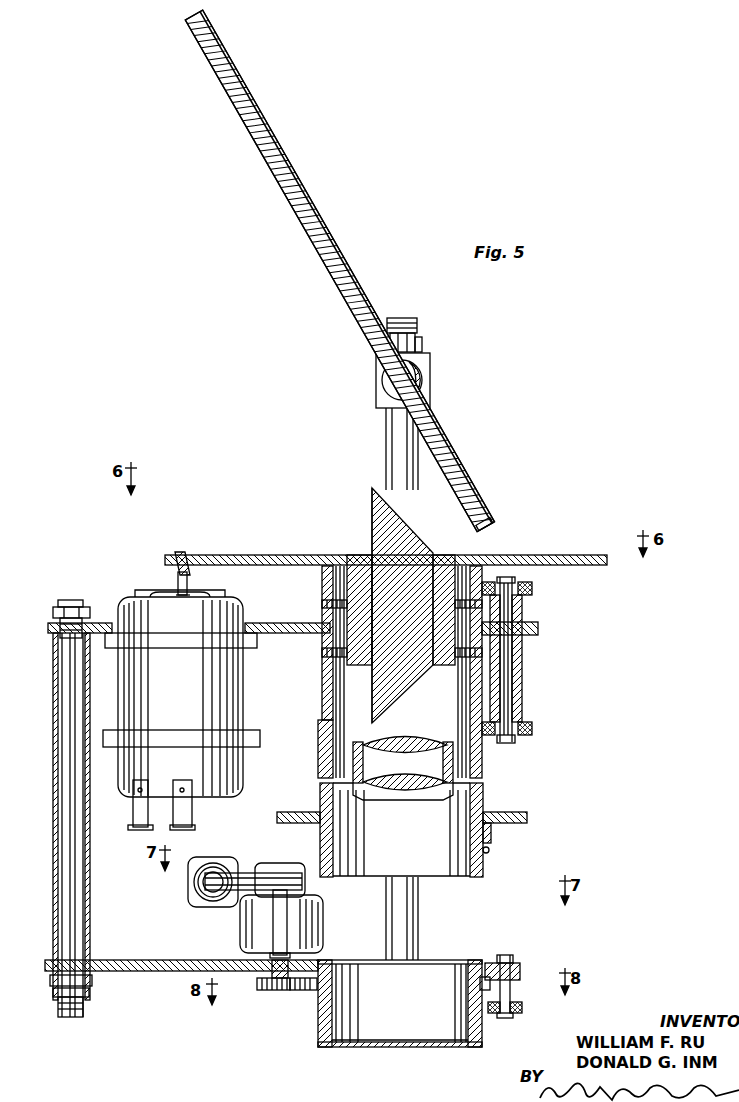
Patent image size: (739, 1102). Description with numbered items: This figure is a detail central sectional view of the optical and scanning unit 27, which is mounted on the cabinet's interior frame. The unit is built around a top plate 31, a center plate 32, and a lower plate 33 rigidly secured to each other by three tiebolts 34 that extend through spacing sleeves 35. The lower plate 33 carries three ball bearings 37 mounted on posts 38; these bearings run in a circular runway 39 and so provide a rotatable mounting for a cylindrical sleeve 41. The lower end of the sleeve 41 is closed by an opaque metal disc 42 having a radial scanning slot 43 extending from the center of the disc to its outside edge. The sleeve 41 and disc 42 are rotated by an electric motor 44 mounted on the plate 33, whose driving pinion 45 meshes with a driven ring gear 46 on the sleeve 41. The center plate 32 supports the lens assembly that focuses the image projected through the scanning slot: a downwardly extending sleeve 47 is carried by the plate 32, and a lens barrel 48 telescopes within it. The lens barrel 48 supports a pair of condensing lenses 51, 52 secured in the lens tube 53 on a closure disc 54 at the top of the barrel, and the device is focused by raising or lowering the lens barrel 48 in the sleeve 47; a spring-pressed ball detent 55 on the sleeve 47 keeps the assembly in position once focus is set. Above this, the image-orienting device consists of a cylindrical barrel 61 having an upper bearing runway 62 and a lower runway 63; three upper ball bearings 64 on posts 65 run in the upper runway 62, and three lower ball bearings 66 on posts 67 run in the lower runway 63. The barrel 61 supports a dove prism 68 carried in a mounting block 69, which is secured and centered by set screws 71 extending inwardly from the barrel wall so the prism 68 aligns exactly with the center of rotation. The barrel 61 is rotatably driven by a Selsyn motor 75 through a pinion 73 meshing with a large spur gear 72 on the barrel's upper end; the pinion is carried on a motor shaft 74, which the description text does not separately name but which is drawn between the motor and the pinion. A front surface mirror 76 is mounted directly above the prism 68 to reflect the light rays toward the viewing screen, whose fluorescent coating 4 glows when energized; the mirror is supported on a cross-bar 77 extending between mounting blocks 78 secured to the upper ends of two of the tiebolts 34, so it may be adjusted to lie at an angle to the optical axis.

The coating 4 is at (330, 268).
The optical and scanning unit 27 is at (564, 496).
The top plate 31 is at (258, 622).
The center plate 32 is at (527, 818).
The lower plate 33 is at (155, 960).
The tiebolts 34 is at (403, 318).
The spacing sleeves 35 is at (397, 452).
The ball bearings 37 is at (515, 1013).
The posts 38 is at (523, 975).
The circular runway 39 is at (318, 1012).
The cylindrical sleeve 41 is at (320, 1036).
The opaque metal disc 42 is at (433, 1042).
The radial scanning slot 43 is at (398, 1030).
The electric motor 44 is at (262, 905).
The driving pinion 45 is at (260, 990).
The driven ring gear 46 is at (480, 983).
The sleeve 47 is at (483, 838).
The lens barrel 48 is at (445, 877).
The condensing lens 51 is at (400, 740).
The condensing lens 52 is at (405, 795).
The lens tube 53 is at (455, 764).
The closure disc 54 is at (455, 786).
The spring-pressed ball detent 55 is at (480, 851).
The cylindrical barrel 61 is at (320, 768).
The upper bearing runway 62 is at (322, 588).
The lower runway 63 is at (320, 730).
The upper ball bearings 64 is at (532, 592).
The posts 65 is at (523, 614).
The lower ball bearings 66 is at (532, 733).
The posts 67 is at (522, 695).
The dove prism 68 is at (378, 508).
The mounting block 69 is at (362, 552).
The set screws 71 is at (320, 604).
The spur gear 72 is at (285, 555).
The pinion 73 is at (178, 553).
The stem 74 is at (180, 590).
The Selsyn motor 75 is at (190, 690).
The front surface mirror 76 is at (318, 240).
The cross-bar 77 is at (422, 380).
The mounting blocks 78 is at (430, 360).